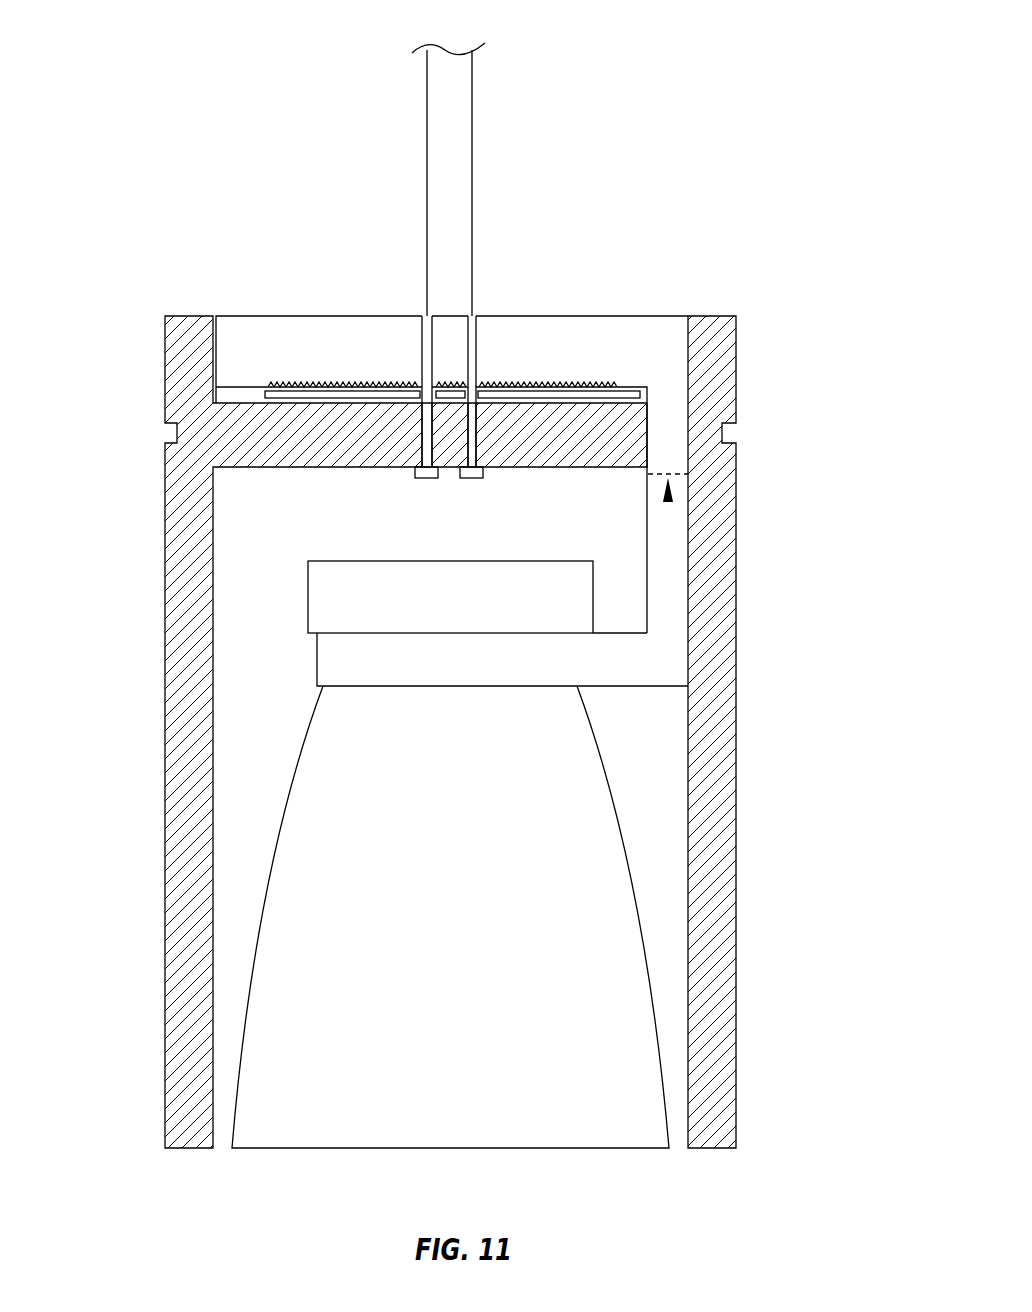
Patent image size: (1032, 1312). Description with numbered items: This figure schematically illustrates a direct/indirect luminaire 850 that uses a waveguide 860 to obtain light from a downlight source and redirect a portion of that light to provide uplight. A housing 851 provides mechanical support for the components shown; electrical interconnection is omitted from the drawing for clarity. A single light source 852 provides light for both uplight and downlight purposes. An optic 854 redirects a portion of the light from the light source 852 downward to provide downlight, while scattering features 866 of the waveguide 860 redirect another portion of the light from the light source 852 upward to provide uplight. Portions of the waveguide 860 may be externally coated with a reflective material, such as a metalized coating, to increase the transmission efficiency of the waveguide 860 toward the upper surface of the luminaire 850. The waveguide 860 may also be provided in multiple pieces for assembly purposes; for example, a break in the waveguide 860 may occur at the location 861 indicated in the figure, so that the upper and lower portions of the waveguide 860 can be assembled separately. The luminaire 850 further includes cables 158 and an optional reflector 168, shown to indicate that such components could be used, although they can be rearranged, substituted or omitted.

The direct/indirect luminaire 850 is at (716, 145).
The housing 851 is at (182, 533).
The light source 852 is at (580, 593).
The optic 854 is at (663, 1072).
The waveguide 860 is at (308, 316).
The location 861 is at (668, 502).
The scattering features 866 is at (587, 385).
The reflector 168 is at (630, 393).
The cables 158 is at (427, 190).